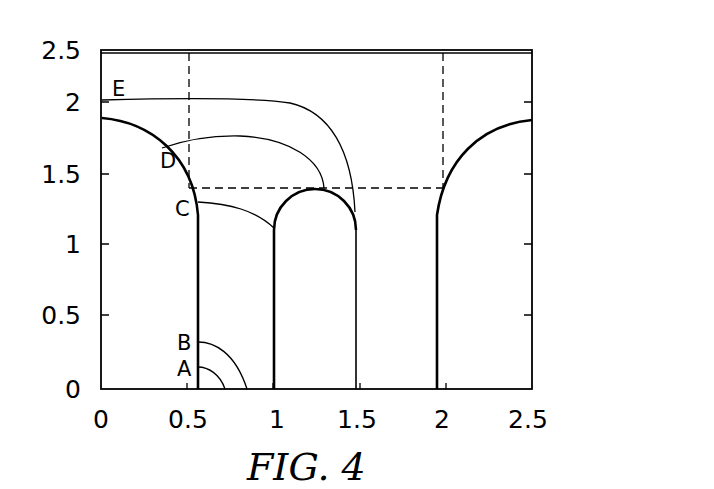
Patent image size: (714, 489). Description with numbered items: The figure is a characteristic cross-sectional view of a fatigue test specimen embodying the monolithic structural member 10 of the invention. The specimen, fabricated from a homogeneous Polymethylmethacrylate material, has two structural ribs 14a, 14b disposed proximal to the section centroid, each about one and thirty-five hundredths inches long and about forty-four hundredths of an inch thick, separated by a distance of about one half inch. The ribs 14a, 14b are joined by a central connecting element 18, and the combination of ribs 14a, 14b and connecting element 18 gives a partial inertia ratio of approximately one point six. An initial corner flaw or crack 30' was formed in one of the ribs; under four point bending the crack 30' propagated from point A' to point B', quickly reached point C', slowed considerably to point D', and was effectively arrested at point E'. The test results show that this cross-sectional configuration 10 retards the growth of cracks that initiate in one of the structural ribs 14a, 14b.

The monolithic structural member 10 is at (505, 70).
The structural rib 14a is at (410, 305).
The structural rib 14b is at (215, 290).
The central connecting element 18 is at (370, 78).
The crack 30' is at (228, 229).